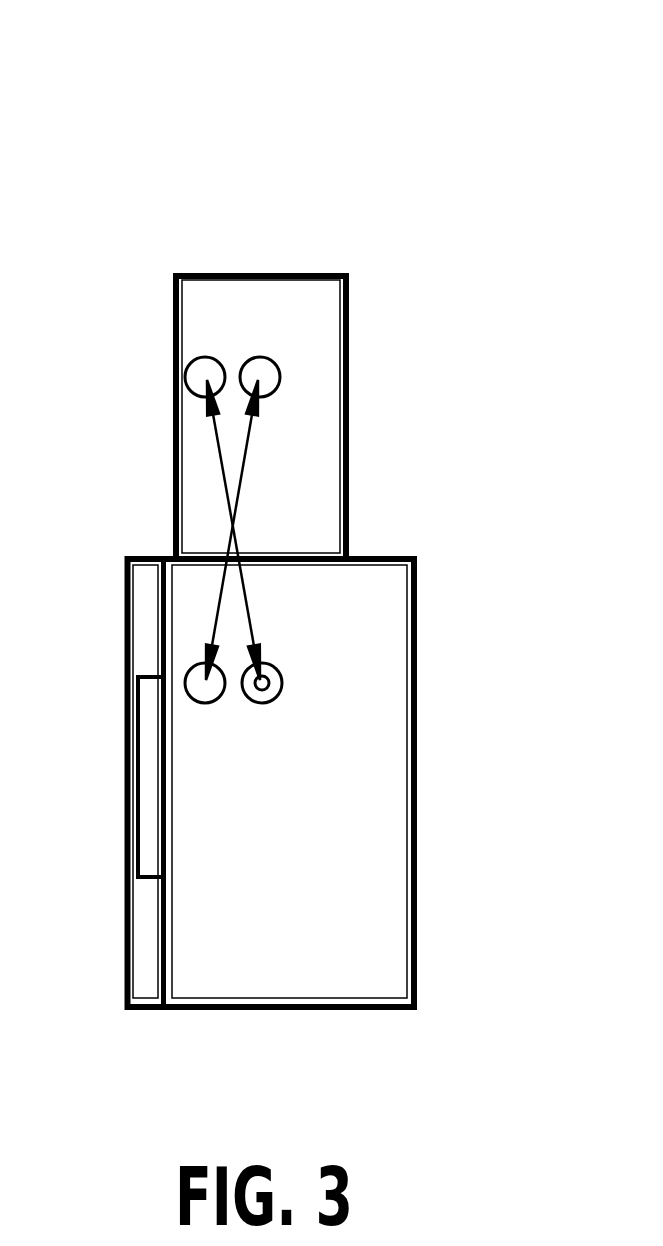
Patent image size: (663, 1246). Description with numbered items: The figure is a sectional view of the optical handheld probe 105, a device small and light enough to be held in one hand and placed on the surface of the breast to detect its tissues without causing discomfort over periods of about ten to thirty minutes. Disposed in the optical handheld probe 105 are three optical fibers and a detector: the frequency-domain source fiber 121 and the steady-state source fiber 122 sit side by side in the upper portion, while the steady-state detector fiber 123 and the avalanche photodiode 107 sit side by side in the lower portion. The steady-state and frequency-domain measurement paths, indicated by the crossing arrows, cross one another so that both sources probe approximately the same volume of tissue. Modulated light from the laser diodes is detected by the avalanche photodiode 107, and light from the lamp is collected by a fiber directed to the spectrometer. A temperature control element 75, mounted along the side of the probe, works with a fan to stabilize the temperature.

The optical handheld probe 105 is at (276, 110).
The frequency-domain source fiber 121 is at (186, 377).
The steady-state source fiber 122 is at (278, 362).
The steady-state detector fiber 123 is at (187, 680).
The avalanche photodiode 107 is at (283, 683).
The temperature control element 75 is at (148, 856).